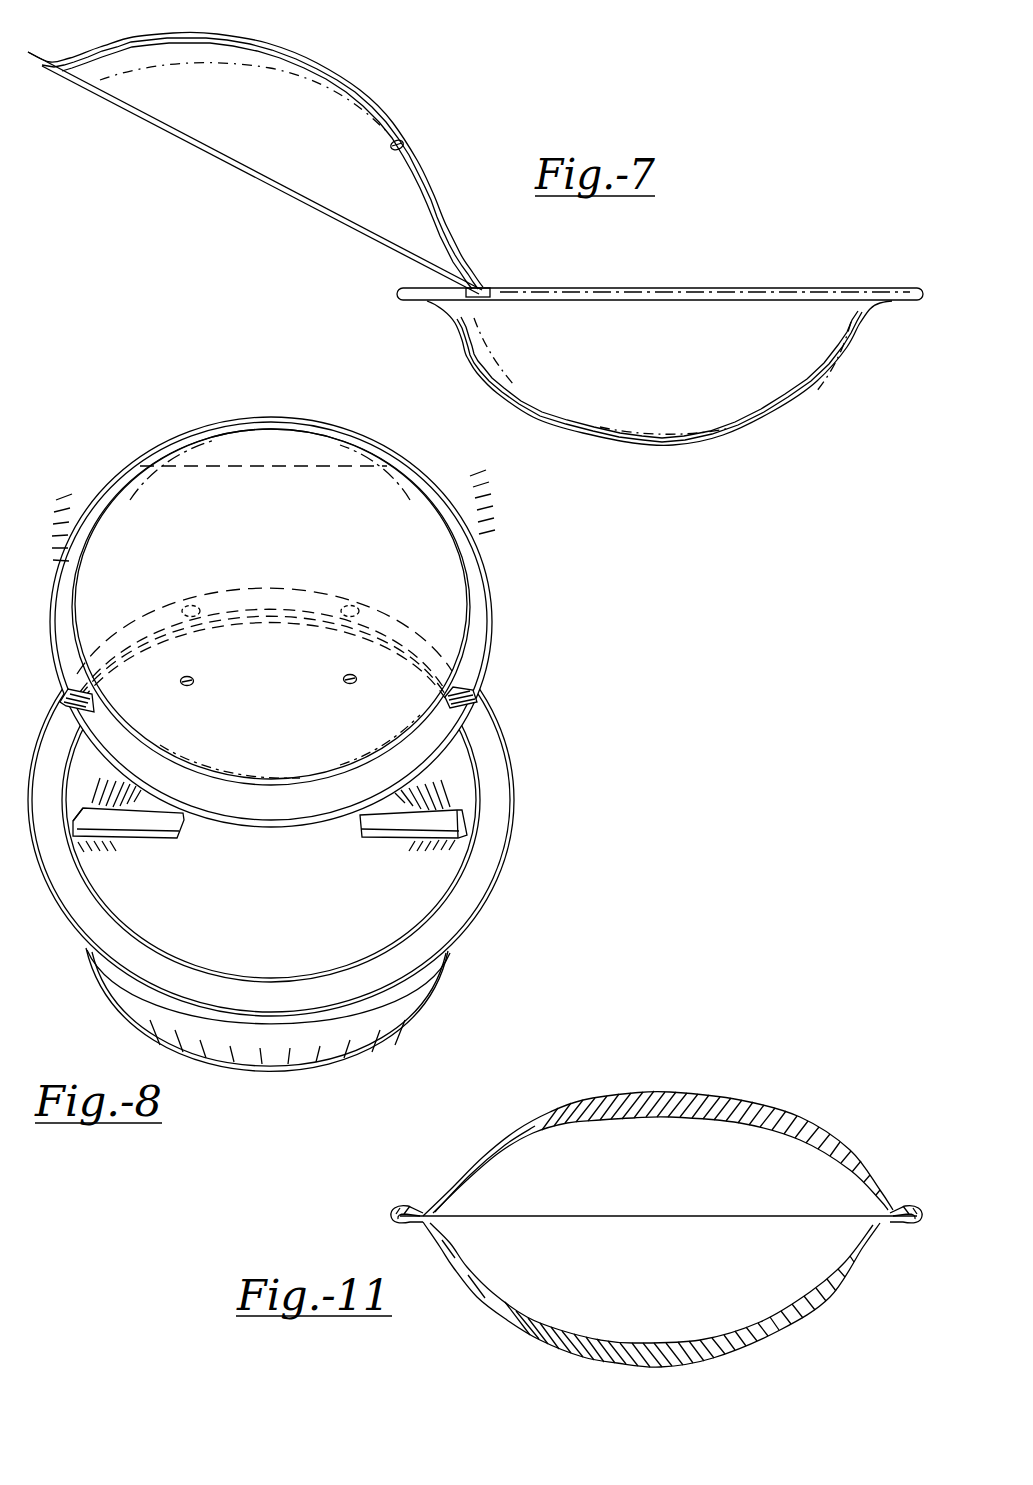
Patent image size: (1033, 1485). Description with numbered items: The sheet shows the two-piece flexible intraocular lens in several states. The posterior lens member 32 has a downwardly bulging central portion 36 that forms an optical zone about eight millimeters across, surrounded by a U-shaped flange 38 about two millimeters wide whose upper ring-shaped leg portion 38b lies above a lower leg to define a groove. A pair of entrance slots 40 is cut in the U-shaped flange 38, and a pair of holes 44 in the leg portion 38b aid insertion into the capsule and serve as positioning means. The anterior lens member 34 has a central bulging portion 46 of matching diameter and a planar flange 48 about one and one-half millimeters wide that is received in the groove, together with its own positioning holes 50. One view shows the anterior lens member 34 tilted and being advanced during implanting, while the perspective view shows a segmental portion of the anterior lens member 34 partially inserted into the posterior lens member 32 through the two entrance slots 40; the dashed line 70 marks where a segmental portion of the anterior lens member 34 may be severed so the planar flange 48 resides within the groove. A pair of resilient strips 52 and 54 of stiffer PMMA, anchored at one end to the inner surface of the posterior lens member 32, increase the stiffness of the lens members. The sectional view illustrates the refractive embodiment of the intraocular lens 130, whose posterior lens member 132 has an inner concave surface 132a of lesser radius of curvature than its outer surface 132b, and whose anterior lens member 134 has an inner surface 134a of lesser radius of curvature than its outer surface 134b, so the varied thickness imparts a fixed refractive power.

In FIG. 7, the posterior lens member 32 is at (818, 403).
In FIG. 8, the posterior lens member 32 is at (462, 958).
In FIG. 7, the anterior lens member 34 is at (360, 83).
In FIG. 8, the anterior lens member 34 is at (82, 507).
In FIG. 7, the central portion 36 is at (717, 440).
In FIG. 8, the central portion 36 is at (130, 1027).
In FIG. 7, the U-shaped flange 38 is at (903, 287).
In FIG. 8, the U-shaped flange 38 is at (508, 783).
In FIG. 8, the leg portion 38b is at (487, 762).
In FIG. 7, the entrance slots 40 is at (483, 284).
In FIG. 8, the entrance slots 40 is at (80, 685).
In FIG. 8, the holes 44 is at (192, 604).
In FIG. 7, the central bulging portion 46 is at (256, 60).
In FIG. 8, the central bulging portion 46 is at (278, 496).
In FIG. 7, the planar flange 48 is at (343, 217).
In FIG. 8, the planar flange 48 is at (471, 592).
In FIG. 7, the positioning holes 50 is at (401, 139).
In FIG. 8, the positioning holes 50 is at (190, 688).
In FIG. 8, the resilient strip 52 is at (163, 844).
In FIG. 8, the resilient strip 54 is at (398, 842).
In FIG. 8, the dashed line 70 is at (201, 466).
In FIG. 11, the intraocular lens 130 is at (700, 1074).
In FIG. 11, the posterior lens member 132 is at (818, 1328).
In FIG. 11, the inner concave surface 132a is at (648, 1337).
In FIG. 11, the outer surface 132b is at (610, 1365).
In FIG. 11, the anterior lens member 134 is at (776, 1102).
In FIG. 11, the inner surface 134a is at (600, 1120).
In FIG. 11, the outer surface 134b is at (555, 1107).